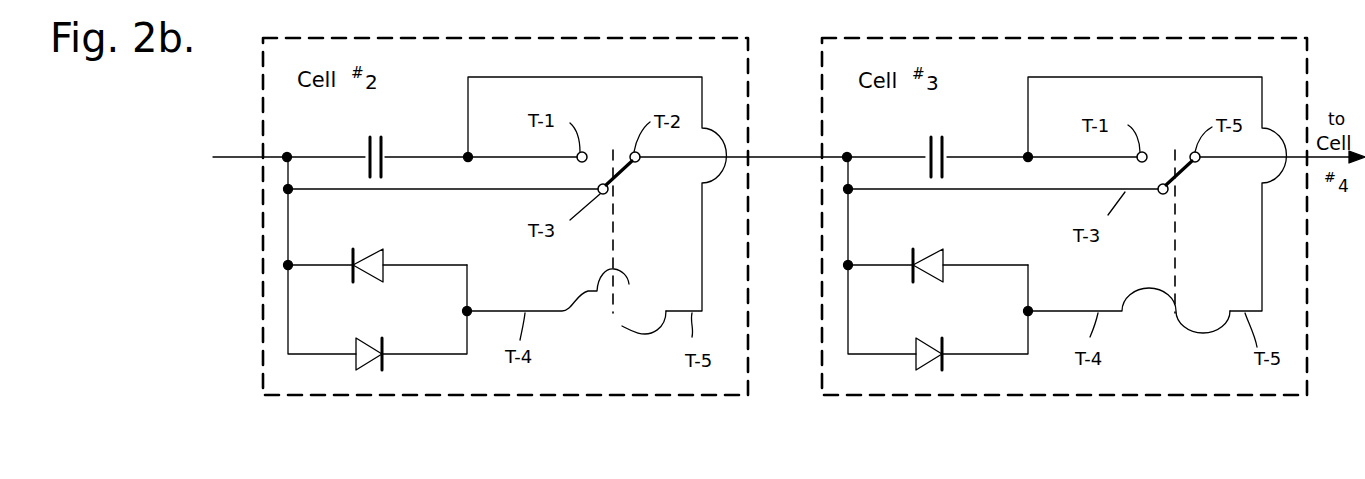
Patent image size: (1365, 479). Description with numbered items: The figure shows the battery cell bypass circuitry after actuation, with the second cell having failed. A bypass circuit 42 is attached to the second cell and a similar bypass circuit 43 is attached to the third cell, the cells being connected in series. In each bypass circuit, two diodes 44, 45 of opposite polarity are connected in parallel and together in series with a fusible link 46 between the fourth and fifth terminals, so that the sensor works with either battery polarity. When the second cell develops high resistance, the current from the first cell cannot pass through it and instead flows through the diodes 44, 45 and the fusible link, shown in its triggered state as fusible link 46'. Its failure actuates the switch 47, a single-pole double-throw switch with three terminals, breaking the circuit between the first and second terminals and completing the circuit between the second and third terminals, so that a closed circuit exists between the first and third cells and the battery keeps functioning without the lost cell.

The bypass circuit 42 is at (262, 172).
The bypass circuit 43 is at (1245, 400).
The diode 44 is at (383, 262).
The diode 45 is at (373, 343).
The fusible link 46 is at (1129, 331).
The fusible link (triggered state) 46' is at (566, 301).
The switch 47 is at (627, 183).